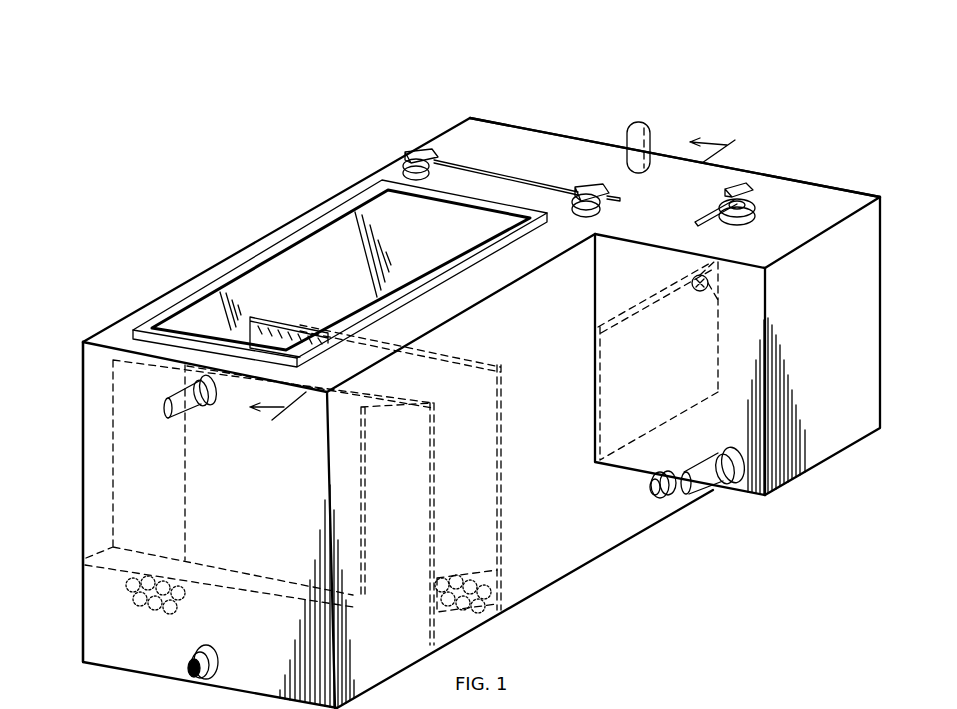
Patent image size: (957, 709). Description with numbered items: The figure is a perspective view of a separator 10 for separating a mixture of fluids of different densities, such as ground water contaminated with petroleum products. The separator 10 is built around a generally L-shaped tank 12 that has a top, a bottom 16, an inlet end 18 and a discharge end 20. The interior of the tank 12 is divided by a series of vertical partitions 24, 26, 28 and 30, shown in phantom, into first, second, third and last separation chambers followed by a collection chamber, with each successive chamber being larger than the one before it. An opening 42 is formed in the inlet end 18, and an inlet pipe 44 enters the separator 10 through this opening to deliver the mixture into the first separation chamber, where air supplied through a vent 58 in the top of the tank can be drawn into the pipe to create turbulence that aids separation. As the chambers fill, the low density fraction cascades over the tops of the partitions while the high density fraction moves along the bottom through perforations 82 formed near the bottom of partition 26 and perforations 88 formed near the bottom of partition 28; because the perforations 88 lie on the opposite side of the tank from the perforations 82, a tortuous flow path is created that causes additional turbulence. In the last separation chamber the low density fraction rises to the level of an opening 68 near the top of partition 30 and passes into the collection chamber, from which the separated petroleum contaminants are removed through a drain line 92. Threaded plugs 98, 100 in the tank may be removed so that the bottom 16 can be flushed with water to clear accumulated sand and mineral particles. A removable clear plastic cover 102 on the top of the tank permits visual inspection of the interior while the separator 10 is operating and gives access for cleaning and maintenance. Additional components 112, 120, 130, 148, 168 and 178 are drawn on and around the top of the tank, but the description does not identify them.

The separator 10 is at (736, 131).
The tank 12 is at (259, 241).
The bottom 16 is at (606, 545).
The inlet end 18 is at (103, 607).
The discharge end 20 is at (538, 128).
The vertical partition 24 is at (367, 465).
The vertical partition 26 is at (440, 462).
The vertical partition 28 is at (505, 460).
The vertical partition 30 is at (612, 325).
The opening 42 is at (220, 393).
The inlet pipe 44 is at (178, 392).
The vent 58 is at (646, 144).
The opening 68 is at (712, 291).
The perforations 82 is at (185, 596).
The perforations 88 is at (500, 572).
The drain line 92 is at (710, 461).
The threaded plug 98 is at (189, 662).
The threaded plug 100 is at (650, 486).
The clear plastic cover 102 is at (340, 228).
The clamp 112 is at (403, 162).
The clamp base 120 is at (600, 207).
The rod 130 is at (430, 150).
The bracket 148 is at (583, 186).
The knob 168 is at (756, 214).
The handle 178 is at (725, 189).